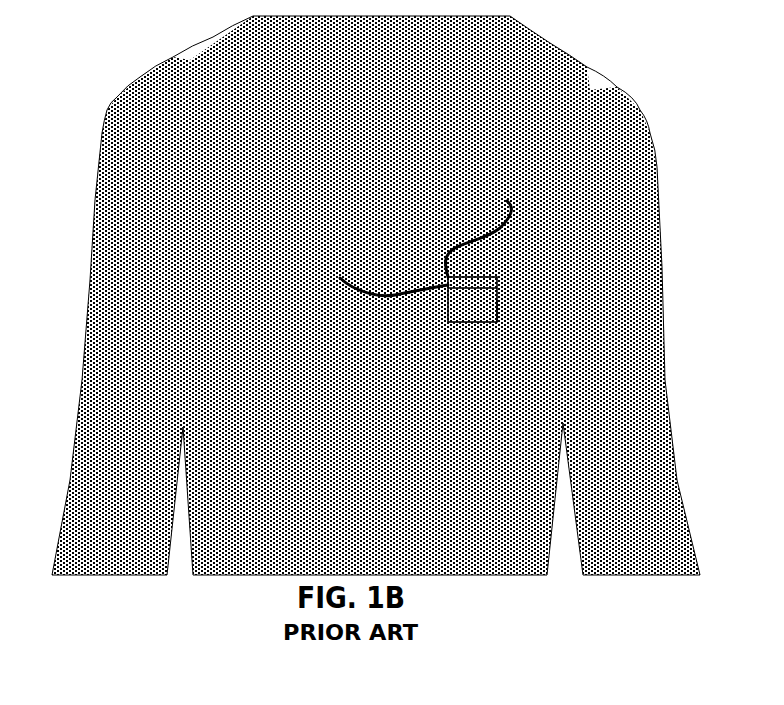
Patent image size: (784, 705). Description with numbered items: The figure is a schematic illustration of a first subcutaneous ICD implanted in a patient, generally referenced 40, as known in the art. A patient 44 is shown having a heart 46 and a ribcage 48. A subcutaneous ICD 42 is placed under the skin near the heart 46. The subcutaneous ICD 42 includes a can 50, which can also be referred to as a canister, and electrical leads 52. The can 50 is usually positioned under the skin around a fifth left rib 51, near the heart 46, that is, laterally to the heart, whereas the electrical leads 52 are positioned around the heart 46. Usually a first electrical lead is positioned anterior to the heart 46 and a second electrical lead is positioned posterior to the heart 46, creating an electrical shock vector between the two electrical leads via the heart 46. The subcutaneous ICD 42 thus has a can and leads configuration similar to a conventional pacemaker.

The first subcutaneous ICD implanted in a patient 40 is at (147, 38).
The subcutaneous ICD 42 is at (477, 326).
The patient 44 is at (678, 313).
The heart 46 is at (408, 363).
The ribcage 48 is at (220, 340).
The can 50 is at (499, 296).
The fifth left rib 51 is at (507, 305).
The electrical leads 52 is at (447, 250).